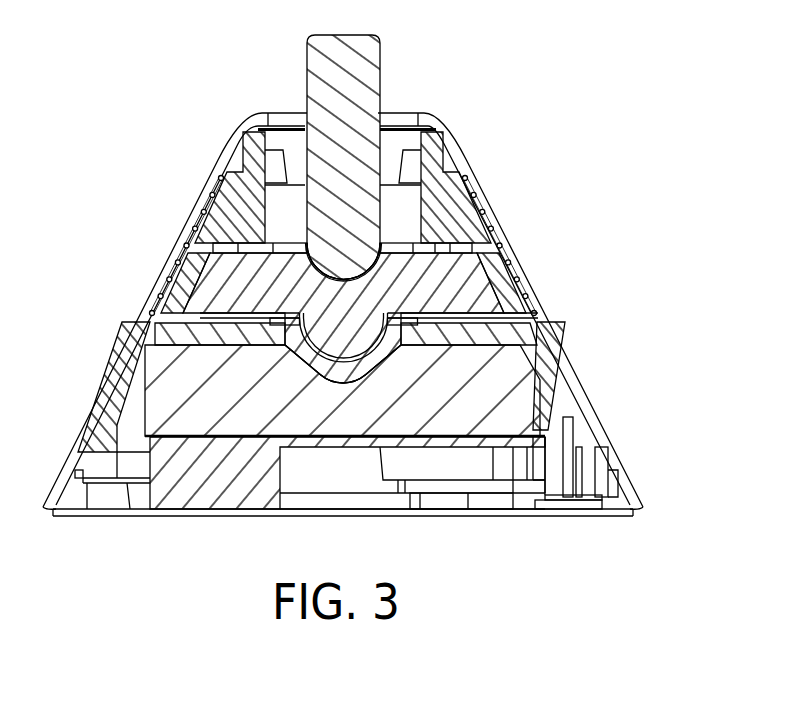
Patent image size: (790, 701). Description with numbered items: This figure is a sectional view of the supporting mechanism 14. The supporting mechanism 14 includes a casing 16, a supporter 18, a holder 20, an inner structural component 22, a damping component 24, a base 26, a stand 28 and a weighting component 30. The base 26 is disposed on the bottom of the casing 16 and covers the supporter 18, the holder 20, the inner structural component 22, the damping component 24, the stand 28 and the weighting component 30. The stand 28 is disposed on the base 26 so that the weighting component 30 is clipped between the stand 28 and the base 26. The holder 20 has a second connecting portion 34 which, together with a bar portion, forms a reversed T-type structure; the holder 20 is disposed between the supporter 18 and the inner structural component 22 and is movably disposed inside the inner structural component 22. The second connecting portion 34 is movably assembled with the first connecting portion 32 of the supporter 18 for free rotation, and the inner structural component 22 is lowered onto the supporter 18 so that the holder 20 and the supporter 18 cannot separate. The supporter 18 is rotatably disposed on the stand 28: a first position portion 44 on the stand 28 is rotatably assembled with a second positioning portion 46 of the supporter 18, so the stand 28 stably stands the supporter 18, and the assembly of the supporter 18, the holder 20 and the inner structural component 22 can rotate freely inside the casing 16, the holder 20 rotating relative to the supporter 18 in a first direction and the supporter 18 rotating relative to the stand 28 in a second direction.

The supporting mechanism 14 is at (552, 70).
The casing 16 is at (610, 452).
The supporter 18 is at (474, 292).
The holder 20 is at (372, 66).
The inner structural component 22 is at (492, 258).
The damping component 24 is at (458, 173).
The base 26 is at (603, 490).
The stand 28 is at (540, 362).
The weighting component 30 is at (525, 405).
The first connecting portion 32 is at (326, 281).
The second connecting portion 34 is at (320, 252).
The first position portion 44 is at (340, 340).
The second positioning portion 46 is at (316, 386).